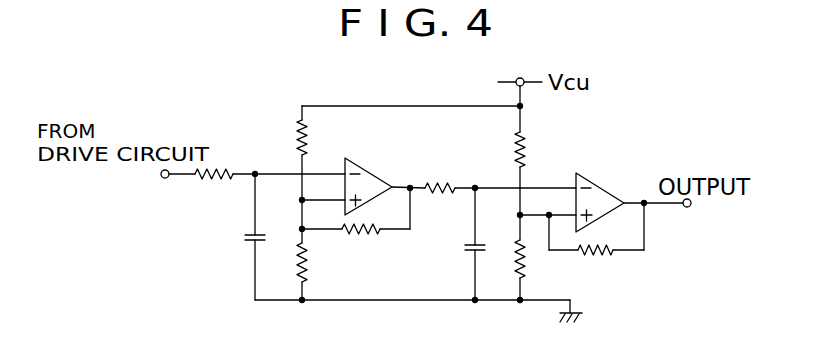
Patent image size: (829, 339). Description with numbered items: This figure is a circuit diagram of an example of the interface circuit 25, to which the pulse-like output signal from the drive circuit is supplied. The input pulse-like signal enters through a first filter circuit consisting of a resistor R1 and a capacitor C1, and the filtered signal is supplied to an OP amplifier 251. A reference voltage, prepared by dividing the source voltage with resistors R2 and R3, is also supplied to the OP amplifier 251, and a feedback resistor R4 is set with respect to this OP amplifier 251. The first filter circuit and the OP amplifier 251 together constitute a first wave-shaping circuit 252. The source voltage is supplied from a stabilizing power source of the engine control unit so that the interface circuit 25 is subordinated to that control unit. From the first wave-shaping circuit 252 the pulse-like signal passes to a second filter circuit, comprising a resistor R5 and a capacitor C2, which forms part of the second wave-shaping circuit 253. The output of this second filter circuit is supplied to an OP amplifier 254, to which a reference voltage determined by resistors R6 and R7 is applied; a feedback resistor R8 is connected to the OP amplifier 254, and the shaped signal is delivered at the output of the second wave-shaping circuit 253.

The interface circuit 25 is at (432, 132).
The OP amplifier 251 is at (368, 181).
The first wave-shaping circuit 252 is at (322, 183).
The second wave-shaping circuit 253 is at (543, 202).
The OP amplifier 254 is at (607, 197).
The resistor R1 is at (214, 188).
The resistor R2 is at (317, 137).
The resistor R3 is at (316, 264).
The feedback resistor R4 is at (356, 225).
The resistor R5 is at (440, 175).
The resistor R6 is at (535, 149).
The resistor R7 is at (535, 262).
The feedback resistor R8 is at (596, 244).
The capacitor C1 is at (240, 237).
The capacitor C2 is at (458, 244).